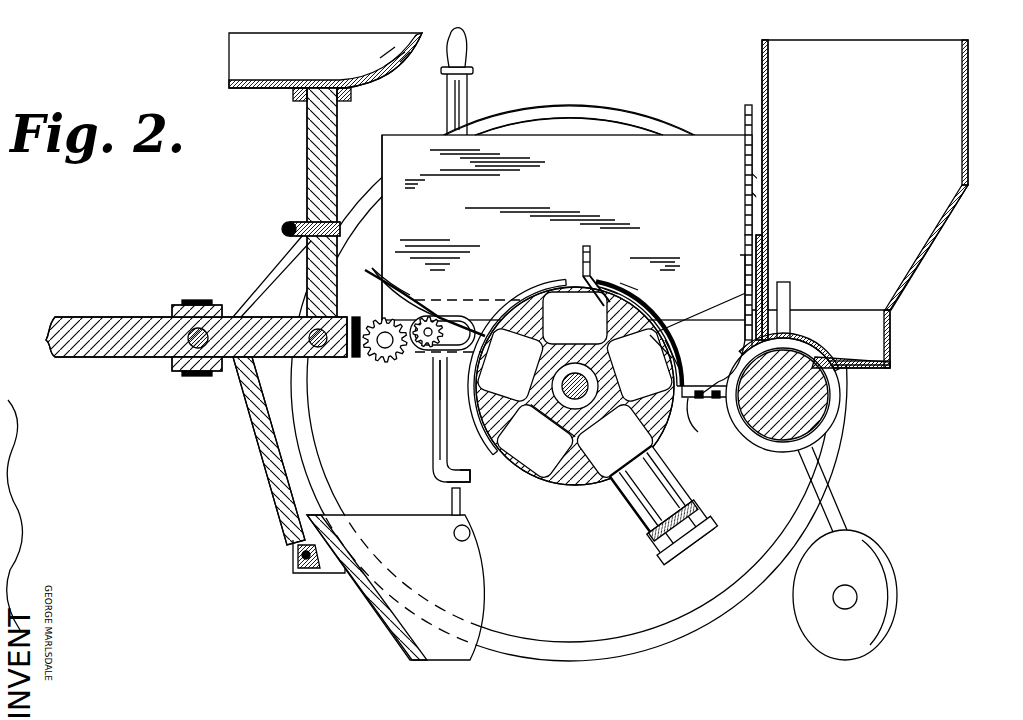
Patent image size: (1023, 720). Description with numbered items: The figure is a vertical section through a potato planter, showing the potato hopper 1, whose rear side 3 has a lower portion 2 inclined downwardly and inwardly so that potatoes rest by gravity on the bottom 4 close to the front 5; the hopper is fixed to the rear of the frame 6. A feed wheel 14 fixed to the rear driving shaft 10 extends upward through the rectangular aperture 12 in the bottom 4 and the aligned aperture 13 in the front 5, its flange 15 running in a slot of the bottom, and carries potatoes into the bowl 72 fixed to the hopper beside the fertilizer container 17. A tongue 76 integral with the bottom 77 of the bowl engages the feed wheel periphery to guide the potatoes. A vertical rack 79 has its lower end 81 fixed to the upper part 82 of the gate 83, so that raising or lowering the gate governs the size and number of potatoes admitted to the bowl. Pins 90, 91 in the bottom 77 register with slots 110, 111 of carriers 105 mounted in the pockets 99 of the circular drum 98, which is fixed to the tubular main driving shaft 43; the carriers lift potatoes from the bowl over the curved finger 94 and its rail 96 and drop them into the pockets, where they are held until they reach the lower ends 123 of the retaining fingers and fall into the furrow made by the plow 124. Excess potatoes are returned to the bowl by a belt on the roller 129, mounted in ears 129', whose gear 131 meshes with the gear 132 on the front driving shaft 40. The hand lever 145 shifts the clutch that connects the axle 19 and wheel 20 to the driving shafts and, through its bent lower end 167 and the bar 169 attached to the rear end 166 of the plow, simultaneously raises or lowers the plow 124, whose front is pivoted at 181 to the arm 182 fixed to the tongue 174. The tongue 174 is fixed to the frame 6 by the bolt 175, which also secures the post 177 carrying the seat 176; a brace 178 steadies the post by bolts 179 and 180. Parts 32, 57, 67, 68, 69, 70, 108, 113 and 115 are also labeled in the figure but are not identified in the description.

The potato hopper 1 is at (970, 152).
The lower portion 2 is at (922, 245).
The rear side 3 is at (970, 72).
The bottom 4 is at (895, 372).
The front 5 is at (770, 162).
The frame 6 is at (305, 375).
The rear driving shaft 10 is at (783, 402).
The rectangular aperture 12 is at (805, 348).
The aperture 13 is at (760, 332).
The feed wheel 14 is at (822, 420).
The flange 15 is at (842, 396).
The fertilizer container 17 is at (567, 227).
The axle 19 is at (548, 478).
The wheel 20 is at (640, 120).
The guide plate 32 is at (428, 310).
The front driving shaft 40 is at (372, 352).
The tubular main driving shaft 43 is at (580, 475).
The discharge chute 57 is at (648, 512).
The chute end cap 67 is at (668, 546).
The chute end plate 68 is at (712, 520).
The chute side 69 is at (675, 480).
The chute flange 70 is at (705, 508).
The bowl 72 is at (670, 350).
The tongue 76 is at (715, 378).
The bottom 77 is at (698, 422).
The vertical rack 79 is at (745, 173).
The lower end 81 is at (758, 230).
The upper part 82 is at (760, 240).
The gate 83 is at (790, 262).
The pin 90 is at (700, 385).
The pin 91 is at (714, 399).
The finger 94 is at (667, 321).
The curved rail 96 is at (645, 308).
The circular drum 98 is at (590, 470).
The pocket 99 is at (543, 426).
The carrier 105 is at (584, 286).
The guard end 108 is at (634, 275).
The slot 110 is at (592, 266).
The slot 111 is at (592, 253).
The guard end 113 is at (621, 283).
The pinion 115 is at (415, 350).
The lower end 123 is at (477, 479).
The plow 124 is at (480, 562).
The roller 129 is at (409, 396).
The ear 129' is at (376, 273).
The gear 131 is at (410, 312).
The gear 132 is at (382, 305).
The hand lever 145 is at (470, 73).
The rear end 166 is at (473, 538).
The rearwardly bent lower end 167 is at (465, 475).
The bar 169 is at (452, 507).
The tongue 174 is at (90, 357).
The bolt 175 is at (312, 330).
The seat 176 is at (230, 82).
The post 177 is at (307, 146).
The brace 178 is at (275, 268).
The bolt 179 is at (284, 229).
The bolt 180 is at (185, 366).
The pivotal connection 181 is at (300, 568).
The arm 182 is at (258, 445).